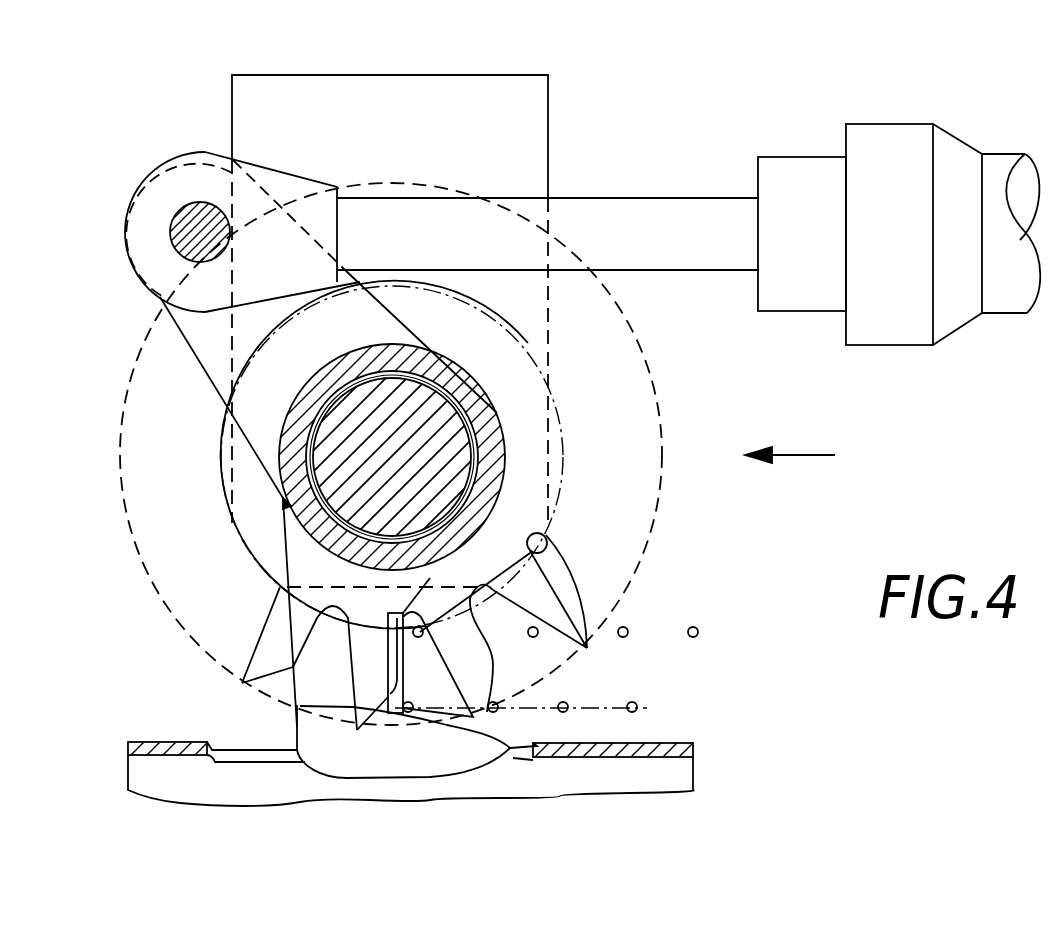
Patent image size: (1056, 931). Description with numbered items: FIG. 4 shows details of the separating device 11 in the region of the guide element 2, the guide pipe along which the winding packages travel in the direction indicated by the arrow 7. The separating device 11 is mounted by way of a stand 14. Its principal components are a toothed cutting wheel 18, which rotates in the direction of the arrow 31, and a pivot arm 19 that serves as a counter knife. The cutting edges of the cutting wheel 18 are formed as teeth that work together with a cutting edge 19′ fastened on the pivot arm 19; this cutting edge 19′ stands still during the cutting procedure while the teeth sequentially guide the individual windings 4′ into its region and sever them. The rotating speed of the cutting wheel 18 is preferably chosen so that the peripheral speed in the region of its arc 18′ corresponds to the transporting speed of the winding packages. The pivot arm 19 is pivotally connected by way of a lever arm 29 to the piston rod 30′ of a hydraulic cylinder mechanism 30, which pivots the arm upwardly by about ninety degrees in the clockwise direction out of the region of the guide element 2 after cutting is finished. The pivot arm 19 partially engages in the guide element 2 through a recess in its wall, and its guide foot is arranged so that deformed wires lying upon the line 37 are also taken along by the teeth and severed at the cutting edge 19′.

The guide element 2 is at (693, 748).
The individual windings 4′ is at (690, 627).
The arrow 7 is at (803, 458).
The separating device 11 is at (165, 148).
The stand 14 is at (535, 110).
The cutting wheel 18 is at (505, 535).
The arc 18′ is at (563, 418).
The pivot arm 19 is at (320, 678).
The cutting edge 19′ is at (383, 703).
The lever arm 29 is at (198, 323).
The hydraulic cylinder mechanism 30 is at (804, 298).
The piston rod 30′ is at (695, 212).
The arrow 31 is at (430, 432).
The line 37 is at (647, 707).